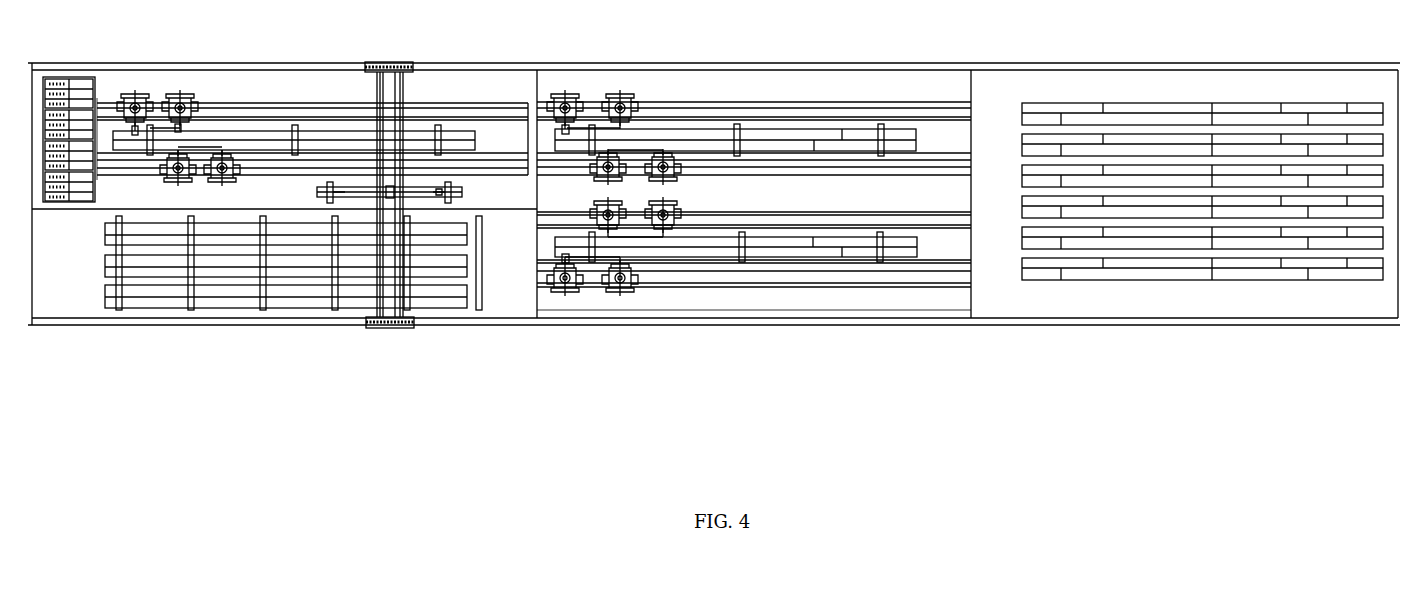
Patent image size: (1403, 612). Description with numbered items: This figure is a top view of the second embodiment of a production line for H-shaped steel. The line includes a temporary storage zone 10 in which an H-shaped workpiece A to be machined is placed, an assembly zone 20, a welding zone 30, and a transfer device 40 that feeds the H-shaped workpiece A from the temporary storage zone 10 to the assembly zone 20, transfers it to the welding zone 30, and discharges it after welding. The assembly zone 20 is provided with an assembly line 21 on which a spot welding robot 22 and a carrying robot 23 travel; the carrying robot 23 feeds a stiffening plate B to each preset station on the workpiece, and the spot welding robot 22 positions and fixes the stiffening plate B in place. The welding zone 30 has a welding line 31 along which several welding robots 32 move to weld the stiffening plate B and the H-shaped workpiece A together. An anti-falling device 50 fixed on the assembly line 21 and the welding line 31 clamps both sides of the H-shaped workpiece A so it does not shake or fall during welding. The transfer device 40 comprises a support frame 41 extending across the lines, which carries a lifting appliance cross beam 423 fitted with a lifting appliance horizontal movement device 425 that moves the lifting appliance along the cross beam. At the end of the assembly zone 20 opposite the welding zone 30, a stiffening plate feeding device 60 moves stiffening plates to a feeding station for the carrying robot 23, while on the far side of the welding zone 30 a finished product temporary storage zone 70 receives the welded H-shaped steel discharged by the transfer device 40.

The temporary storage zone 10 is at (714, 213).
The assembly zone 20 is at (192, 101).
The assembly line 21 is at (312, 98).
The spot welding robot 22 is at (201, 104).
The carrying robot 23 is at (156, 104).
The stiffening plate B is at (515, 193).
The anti-falling device 50 is at (515, 193).
The welding zone 30 is at (754, 330).
The welding line 31 is at (754, 193).
The welding robot 32 is at (614, 193).
The transfer device 40 is at (370, 218).
The support frame 41 is at (410, 213).
The lifting appliance cross beam 423 is at (438, 275).
The lifting appliance horizontal movement device 425 is at (419, 273).
The H-shaped workpiece A is at (293, 290).
The stiffening plate feeding device 60 is at (74, 112).
The finished product temporary storage zone 70 is at (1202, 233).